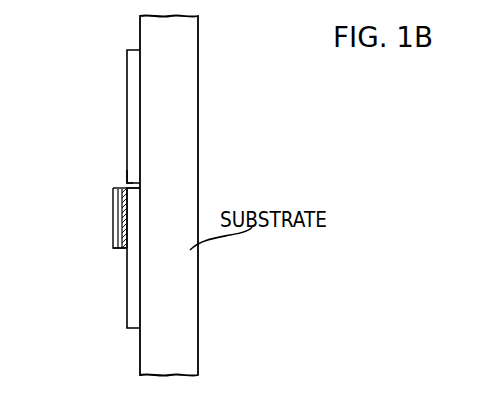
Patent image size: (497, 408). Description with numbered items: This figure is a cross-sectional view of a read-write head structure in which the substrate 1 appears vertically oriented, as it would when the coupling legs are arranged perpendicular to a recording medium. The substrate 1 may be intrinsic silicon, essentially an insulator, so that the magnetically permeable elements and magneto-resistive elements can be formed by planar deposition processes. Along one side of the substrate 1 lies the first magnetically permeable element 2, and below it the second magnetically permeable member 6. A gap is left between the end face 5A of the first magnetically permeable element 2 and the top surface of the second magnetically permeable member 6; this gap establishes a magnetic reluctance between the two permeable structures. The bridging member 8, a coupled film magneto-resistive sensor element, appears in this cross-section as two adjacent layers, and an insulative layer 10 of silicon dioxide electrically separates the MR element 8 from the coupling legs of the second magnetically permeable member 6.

The substrate 1 is at (193, 42).
The first magnetically permeable element 2 is at (135, 58).
The end face 5A is at (128, 179).
The second magnetically permeable member 6 is at (133, 198).
The bridging member 8 is at (117, 225).
The insulative layer 10 is at (122, 250).